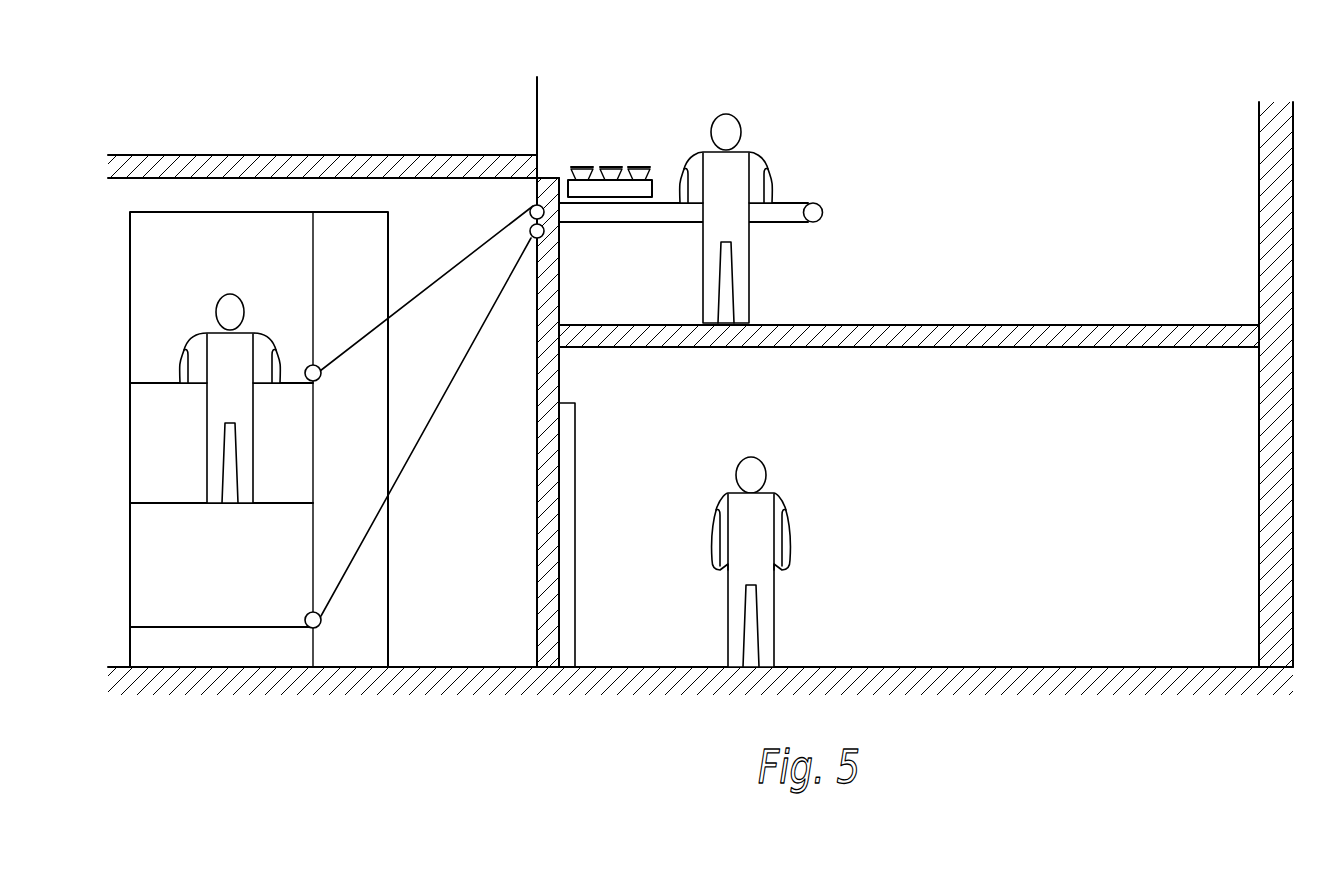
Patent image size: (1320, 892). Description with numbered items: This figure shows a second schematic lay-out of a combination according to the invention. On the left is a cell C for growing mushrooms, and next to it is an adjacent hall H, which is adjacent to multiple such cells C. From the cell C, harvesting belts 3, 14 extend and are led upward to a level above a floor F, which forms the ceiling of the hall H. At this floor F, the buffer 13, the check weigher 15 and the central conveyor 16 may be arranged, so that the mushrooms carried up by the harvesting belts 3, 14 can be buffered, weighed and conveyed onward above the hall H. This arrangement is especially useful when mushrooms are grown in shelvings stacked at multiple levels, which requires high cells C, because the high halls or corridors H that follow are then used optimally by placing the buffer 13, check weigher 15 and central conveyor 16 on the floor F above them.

The harvesting belt 3 is at (378, 316).
The harvesting belt 14 is at (378, 498).
The buffer 13 is at (744, 181).
The check weigher 15 is at (691, 212).
The central conveyor 16 is at (610, 182).
The cell C is at (240, 267).
The floor F is at (927, 323).
The hall H is at (949, 513).